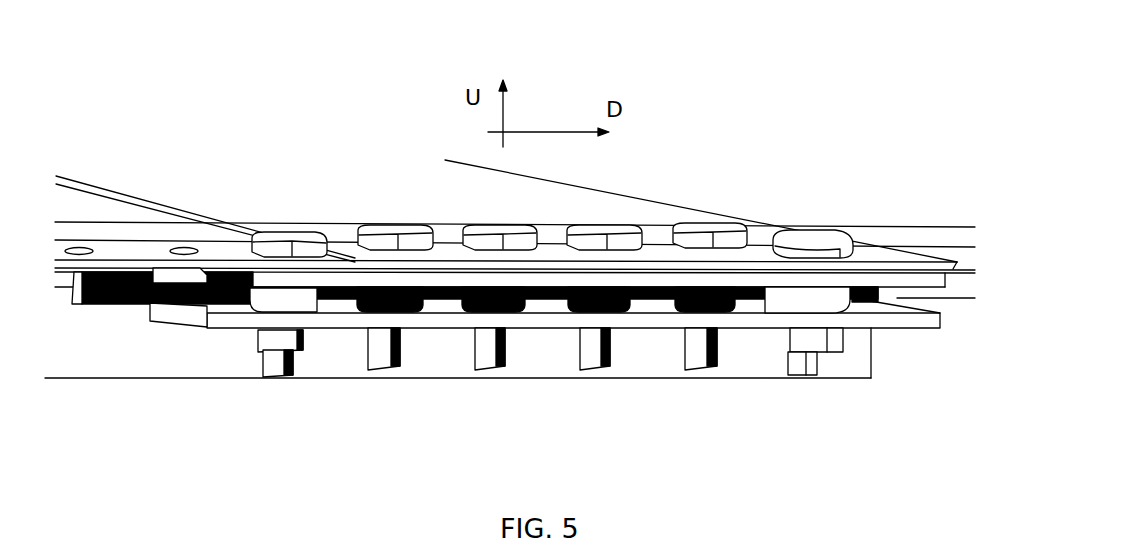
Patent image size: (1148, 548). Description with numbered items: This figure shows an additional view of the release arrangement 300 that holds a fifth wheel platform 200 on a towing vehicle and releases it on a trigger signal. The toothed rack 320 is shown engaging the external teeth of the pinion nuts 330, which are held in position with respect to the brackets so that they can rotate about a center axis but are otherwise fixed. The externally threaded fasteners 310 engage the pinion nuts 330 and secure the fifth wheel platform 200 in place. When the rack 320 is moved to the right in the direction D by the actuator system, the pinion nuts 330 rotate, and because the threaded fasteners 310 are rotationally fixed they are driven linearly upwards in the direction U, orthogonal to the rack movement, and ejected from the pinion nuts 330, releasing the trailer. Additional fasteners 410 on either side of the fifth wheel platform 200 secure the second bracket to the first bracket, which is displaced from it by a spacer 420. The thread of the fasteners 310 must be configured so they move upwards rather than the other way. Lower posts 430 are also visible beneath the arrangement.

The fifth wheel platform 200 is at (200, 181).
The release arrangement 300 is at (699, 113).
The threaded fasteners 310 is at (496, 232).
The rack 320 is at (105, 287).
The pinion nuts 330 is at (390, 299).
The additional fasteners 410 is at (291, 237).
The spacer 420 is at (273, 297).
The lower posts 430 is at (285, 338).